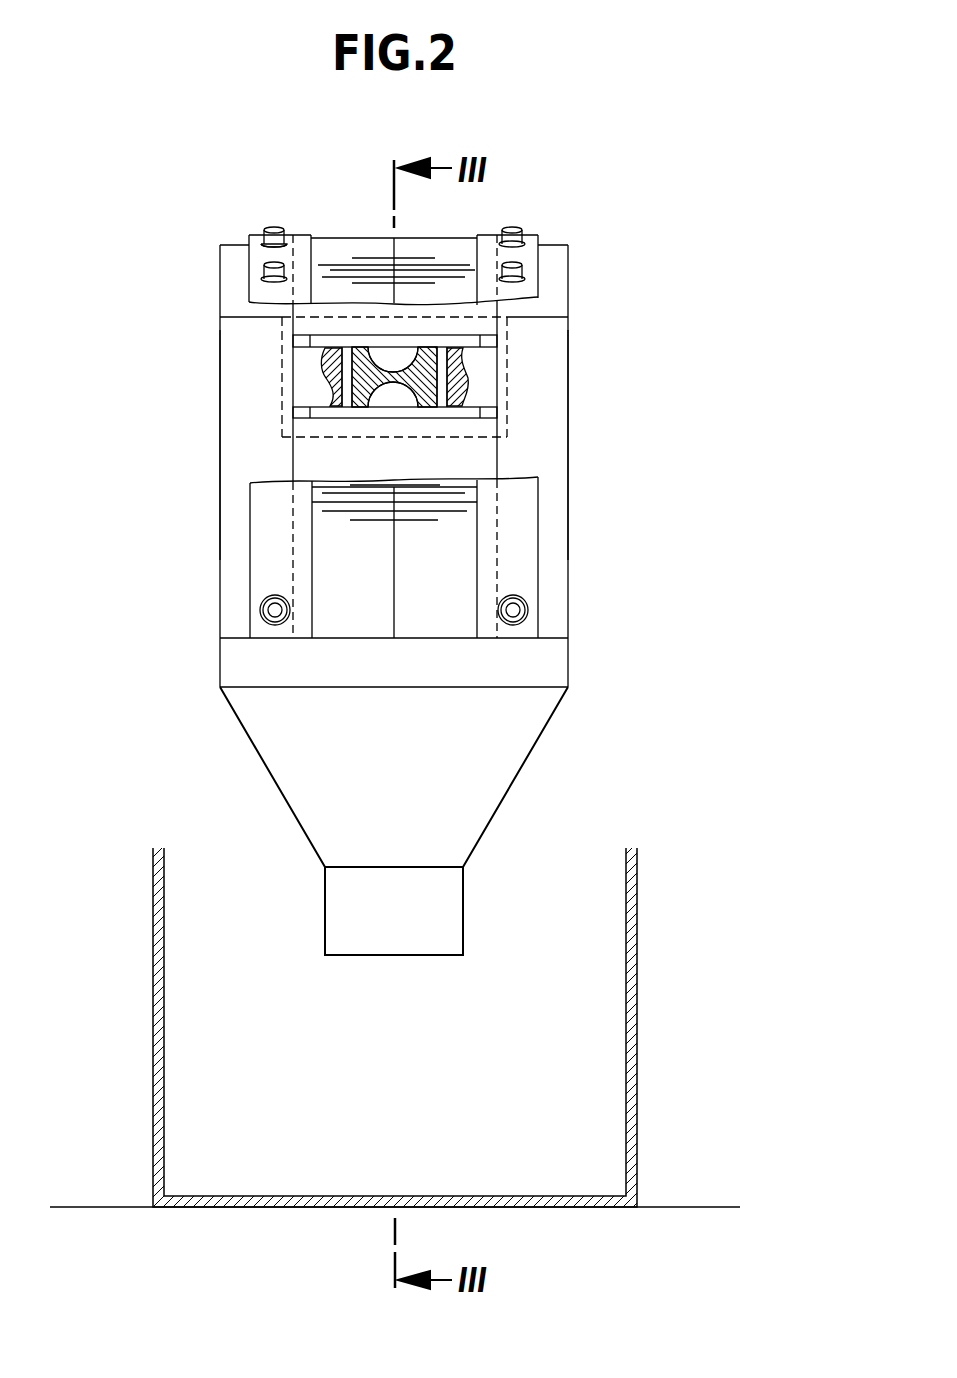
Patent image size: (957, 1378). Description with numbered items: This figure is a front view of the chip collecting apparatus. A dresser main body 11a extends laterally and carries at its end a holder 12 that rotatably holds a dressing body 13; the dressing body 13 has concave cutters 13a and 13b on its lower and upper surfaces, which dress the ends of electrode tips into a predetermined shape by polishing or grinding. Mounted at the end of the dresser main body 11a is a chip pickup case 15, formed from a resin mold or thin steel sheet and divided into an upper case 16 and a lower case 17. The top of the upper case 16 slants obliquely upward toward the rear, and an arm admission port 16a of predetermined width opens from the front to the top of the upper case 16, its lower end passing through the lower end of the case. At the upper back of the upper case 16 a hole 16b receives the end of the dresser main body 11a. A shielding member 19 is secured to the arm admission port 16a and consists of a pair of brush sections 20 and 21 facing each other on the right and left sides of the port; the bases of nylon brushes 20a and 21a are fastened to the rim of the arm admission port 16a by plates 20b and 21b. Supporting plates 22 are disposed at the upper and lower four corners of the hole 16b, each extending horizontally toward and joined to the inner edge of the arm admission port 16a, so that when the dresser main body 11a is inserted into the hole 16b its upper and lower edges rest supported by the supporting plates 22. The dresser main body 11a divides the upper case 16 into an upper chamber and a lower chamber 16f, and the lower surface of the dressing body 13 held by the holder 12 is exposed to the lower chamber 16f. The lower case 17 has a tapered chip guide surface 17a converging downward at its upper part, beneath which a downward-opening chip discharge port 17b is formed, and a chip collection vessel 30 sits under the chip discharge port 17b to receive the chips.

The dresser main body 11a is at (483, 385).
The holder 12 is at (345, 370).
The dressing body 13 is at (405, 412).
The concave cutter 13a is at (375, 387).
The concave cutter 13b is at (410, 352).
The chip pickup case 15 is at (660, 600).
The upper case 16 is at (398, 466).
The arm admission port 16a is at (300, 462).
The hole 16b is at (508, 427).
The lower chamber 16f is at (395, 469).
The lower case 17 is at (437, 812).
The chip guide surface 17a is at (507, 772).
The chip discharge port 17b is at (455, 905).
The shielding member 19 is at (137, 640).
The brush section 20 is at (262, 572).
The brush 20a is at (332, 552).
The plate 20b is at (265, 509).
The brush section 21 is at (404, 616).
The brush 21a is at (438, 618).
The plate 21b is at (527, 548).
The supporting plate 22 is at (302, 343).
The chip collection vessel 30 is at (632, 993).